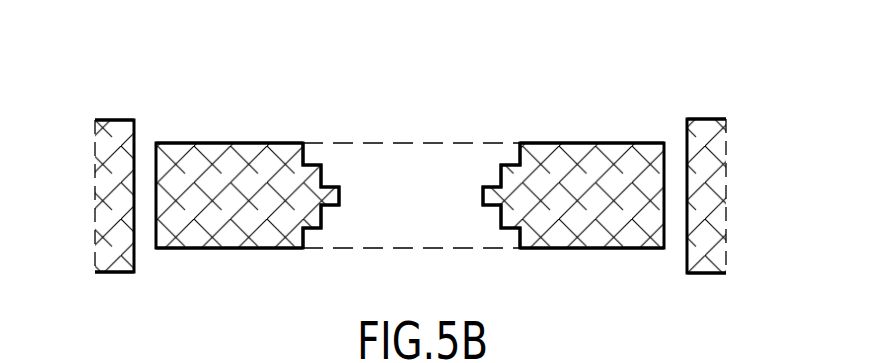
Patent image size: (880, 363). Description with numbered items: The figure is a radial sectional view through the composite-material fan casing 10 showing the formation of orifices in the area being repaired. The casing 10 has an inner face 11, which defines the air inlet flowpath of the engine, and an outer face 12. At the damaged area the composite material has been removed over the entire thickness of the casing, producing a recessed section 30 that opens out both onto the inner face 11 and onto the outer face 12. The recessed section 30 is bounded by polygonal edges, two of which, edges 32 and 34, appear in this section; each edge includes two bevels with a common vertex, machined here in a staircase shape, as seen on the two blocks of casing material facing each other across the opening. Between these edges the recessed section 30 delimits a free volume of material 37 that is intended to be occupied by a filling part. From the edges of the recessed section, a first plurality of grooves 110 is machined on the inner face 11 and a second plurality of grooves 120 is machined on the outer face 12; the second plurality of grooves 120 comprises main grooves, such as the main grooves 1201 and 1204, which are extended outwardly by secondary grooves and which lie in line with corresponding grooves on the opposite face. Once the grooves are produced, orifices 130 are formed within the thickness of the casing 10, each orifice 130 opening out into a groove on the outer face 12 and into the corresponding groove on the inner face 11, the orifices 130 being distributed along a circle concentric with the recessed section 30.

The fan casing 10 is at (107, 198).
The inner face 11 is at (118, 274).
The outer face 12 is at (104, 118).
The recessed section 30 is at (410, 138).
The edge 32 is at (303, 157).
The edge 34 is at (520, 157).
The free volume of material 37 is at (426, 208).
The first plurality of grooves 110 is at (230, 260).
The second plurality of grooves 120 is at (263, 118).
The orifices 130 is at (146, 160).
The main groove 1201 is at (210, 140).
The main groove 1204 is at (615, 140).